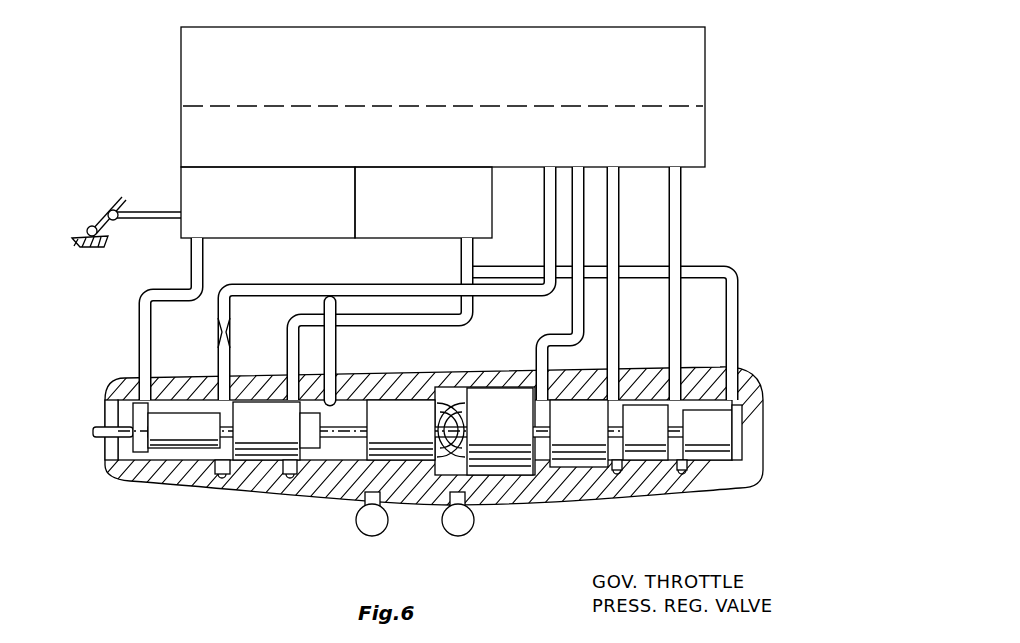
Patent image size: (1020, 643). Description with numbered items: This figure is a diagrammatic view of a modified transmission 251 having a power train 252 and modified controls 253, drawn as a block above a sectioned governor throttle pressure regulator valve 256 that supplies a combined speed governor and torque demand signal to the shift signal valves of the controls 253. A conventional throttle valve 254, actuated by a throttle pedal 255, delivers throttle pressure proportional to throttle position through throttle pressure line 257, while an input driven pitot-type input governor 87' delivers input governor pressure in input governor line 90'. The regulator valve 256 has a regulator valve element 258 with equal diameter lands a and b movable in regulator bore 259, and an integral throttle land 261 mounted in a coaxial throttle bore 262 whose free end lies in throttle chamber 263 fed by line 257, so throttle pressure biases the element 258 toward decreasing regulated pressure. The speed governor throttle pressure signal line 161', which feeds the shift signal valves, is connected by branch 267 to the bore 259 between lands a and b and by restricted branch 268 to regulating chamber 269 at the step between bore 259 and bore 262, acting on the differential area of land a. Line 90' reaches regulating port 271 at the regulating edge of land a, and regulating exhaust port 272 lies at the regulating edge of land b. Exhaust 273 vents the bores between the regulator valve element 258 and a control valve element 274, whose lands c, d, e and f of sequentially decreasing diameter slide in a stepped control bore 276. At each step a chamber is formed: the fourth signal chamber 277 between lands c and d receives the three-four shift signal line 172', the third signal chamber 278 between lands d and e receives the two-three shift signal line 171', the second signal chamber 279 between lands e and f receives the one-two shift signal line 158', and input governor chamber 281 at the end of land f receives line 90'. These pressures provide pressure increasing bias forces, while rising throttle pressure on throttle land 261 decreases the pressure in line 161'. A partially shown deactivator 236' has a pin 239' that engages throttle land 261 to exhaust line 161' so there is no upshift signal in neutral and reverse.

The transmission 251 is at (708, 64).
The power train 252 is at (705, 96).
The controls 253 is at (705, 150).
The throttle valve 254 is at (189, 195).
The throttle pedal 255 is at (110, 204).
The input governor 87' is at (408, 223).
The throttle pressure line 257 is at (177, 270).
The restricted branch 268 is at (241, 288).
The speed governor throttle pressure signal line 161' is at (409, 274).
The input governor line 90' is at (544, 318).
The 1-2 shift signal line 158' is at (608, 316).
The 3-4 shift signal line 172' is at (554, 283).
The 2-3 shift signal line 171' is at (633, 283).
The throttle bore 262 is at (176, 360).
The governor throttle pressure regulator valve 256 is at (257, 363).
The branch 267 is at (334, 348).
The regulator bore 259 is at (366, 382).
The control bore 276 is at (574, 394).
The deactivator 236' is at (84, 409).
The pin 239' is at (89, 455).
The input governor chamber 281 is at (732, 394).
The throttle chamber 263 is at (130, 465).
The throttle land 261 is at (170, 455).
The regulating chamber 269 is at (222, 475).
The regulating port 271 is at (290, 478).
The regulator valve element 258 is at (312, 487).
The regulating exhaust port 272 is at (367, 537).
The exhaust 273 is at (463, 536).
The 4th signal chamber 277 is at (548, 495).
The control valve element 274 is at (565, 462).
The 3rd signal chamber 278 is at (626, 470).
The 2nd signal chamber 279 is at (695, 462).
The land a is at (256, 477).
The land b is at (421, 470).
The land c is at (514, 462).
The land d is at (586, 497).
The land e is at (668, 462).
The land f is at (712, 465).